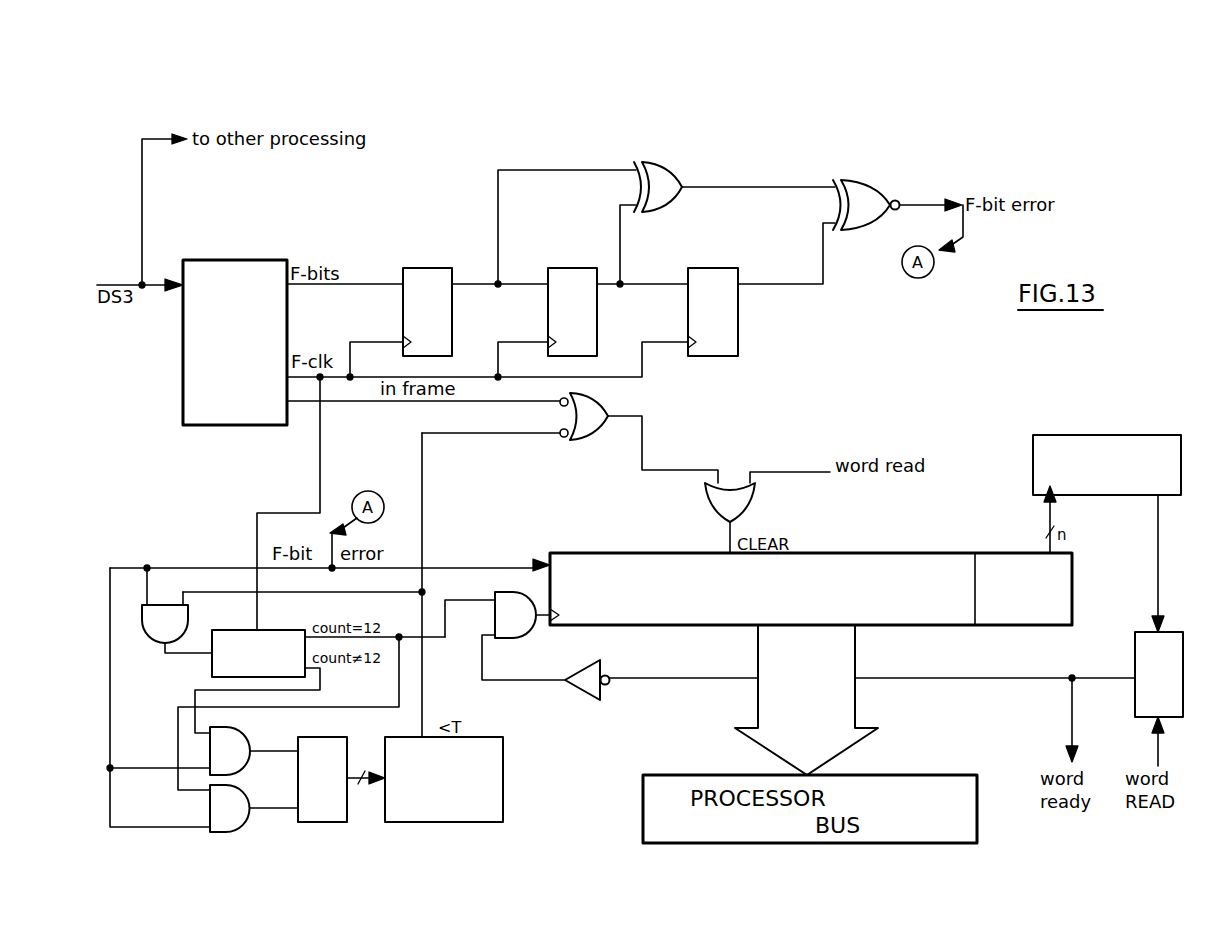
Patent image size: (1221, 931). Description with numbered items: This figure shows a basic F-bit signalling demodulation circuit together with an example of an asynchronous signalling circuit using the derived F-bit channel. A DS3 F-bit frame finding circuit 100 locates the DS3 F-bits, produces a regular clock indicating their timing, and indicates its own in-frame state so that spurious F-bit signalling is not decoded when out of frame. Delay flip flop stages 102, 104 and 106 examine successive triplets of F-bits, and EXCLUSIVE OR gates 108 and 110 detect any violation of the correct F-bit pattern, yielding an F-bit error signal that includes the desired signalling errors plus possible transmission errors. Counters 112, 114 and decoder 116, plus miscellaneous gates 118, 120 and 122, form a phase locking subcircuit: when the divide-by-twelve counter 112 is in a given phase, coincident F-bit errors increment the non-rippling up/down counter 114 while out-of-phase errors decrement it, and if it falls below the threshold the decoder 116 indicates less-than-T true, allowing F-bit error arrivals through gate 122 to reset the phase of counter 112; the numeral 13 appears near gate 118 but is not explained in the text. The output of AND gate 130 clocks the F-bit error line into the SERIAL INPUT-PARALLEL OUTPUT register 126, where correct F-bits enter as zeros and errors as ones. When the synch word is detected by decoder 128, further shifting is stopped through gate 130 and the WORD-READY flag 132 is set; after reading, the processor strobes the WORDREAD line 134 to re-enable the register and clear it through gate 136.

The DS3 F-bit frame finding circuit 100 is at (183, 386).
The delay flip flop stage 102 is at (416, 268).
The delay flip flop stage 104 is at (563, 268).
The delay flip flop stage 106 is at (705, 268).
The EXCLUSIVE OR gate 108 is at (672, 170).
The EXCLUSIVE OR gate 110 is at (872, 182).
The ÷12 counter 112 is at (234, 628).
The up/down counter 114 is at (339, 825).
The decoder 116 is at (459, 825).
The gate 118 is at (217, 818).
The AND gate output 13 is at (237, 829).
The gate 120 is at (249, 729).
The gate 122 is at (147, 640).
The SERIAL INPUT-PARALLEL OUTPUT register 126 is at (858, 552).
The synch word decoder 128 is at (1109, 430).
The AND gate 130 is at (508, 638).
The WORD-READY flag 132 is at (1070, 735).
The WORDREAD line 134 is at (1160, 752).
The gate 136 is at (748, 508).